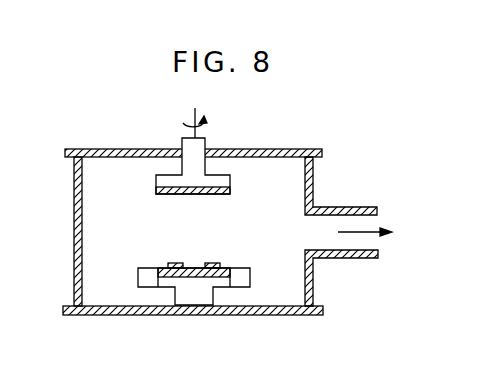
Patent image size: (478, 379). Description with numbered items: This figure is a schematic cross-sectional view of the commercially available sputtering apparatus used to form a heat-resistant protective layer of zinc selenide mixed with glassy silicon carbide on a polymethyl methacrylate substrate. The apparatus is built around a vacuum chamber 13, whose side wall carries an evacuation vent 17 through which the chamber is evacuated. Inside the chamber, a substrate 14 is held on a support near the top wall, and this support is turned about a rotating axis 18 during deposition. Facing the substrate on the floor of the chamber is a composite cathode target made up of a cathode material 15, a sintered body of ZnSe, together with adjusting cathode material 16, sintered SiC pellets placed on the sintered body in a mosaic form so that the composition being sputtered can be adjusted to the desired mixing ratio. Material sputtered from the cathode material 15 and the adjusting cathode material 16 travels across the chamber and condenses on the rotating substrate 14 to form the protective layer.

The vacuum chamber 13 is at (292, 149).
The substrate 14 is at (157, 183).
The cathode material 15 is at (220, 274).
The adjusting cathode material 16 is at (175, 272).
The evacuation vent 17 is at (382, 233).
The rotating axis 18 is at (196, 110).